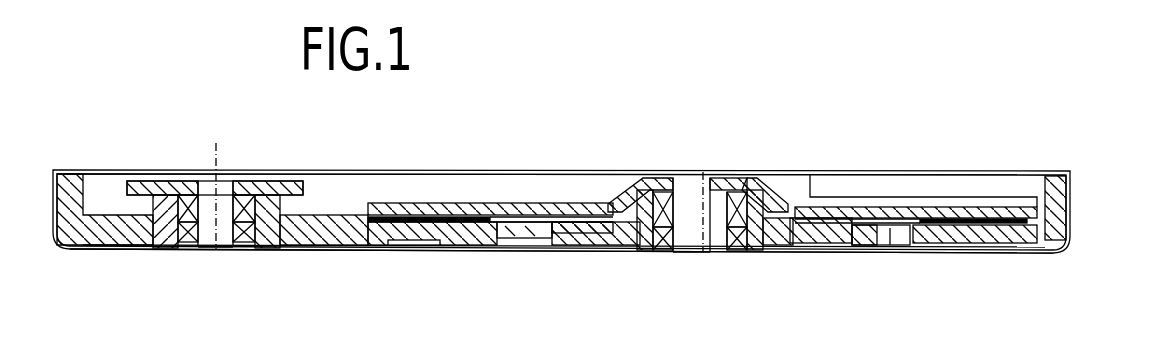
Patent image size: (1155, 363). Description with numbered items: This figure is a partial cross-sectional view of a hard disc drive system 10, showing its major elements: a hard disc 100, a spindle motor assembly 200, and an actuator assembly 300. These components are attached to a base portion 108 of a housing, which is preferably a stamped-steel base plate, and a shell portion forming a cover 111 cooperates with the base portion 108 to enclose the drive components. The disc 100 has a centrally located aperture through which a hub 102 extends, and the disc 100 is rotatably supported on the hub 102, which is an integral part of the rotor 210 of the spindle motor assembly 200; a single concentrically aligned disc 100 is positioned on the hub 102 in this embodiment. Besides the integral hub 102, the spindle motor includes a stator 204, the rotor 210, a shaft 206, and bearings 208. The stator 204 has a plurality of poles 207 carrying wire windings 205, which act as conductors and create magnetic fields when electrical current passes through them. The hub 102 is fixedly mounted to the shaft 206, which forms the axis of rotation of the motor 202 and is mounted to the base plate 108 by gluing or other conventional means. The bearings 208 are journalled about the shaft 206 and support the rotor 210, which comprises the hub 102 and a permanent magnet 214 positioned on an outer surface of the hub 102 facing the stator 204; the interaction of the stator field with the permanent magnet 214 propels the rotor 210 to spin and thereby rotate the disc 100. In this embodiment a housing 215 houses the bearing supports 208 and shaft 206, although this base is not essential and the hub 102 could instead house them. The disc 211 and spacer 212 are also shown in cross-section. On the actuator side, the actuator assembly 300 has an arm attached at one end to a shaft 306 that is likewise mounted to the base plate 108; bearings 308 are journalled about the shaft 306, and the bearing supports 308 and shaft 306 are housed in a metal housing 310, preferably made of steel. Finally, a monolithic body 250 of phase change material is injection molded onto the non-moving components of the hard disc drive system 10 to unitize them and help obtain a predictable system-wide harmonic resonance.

The hard disc drive system 10 is at (570, 283).
The hard disc 100 is at (1045, 210).
The hub 102 is at (657, 172).
The base portion 108 is at (93, 250).
The cover 111 is at (788, 173).
The spindle motor assembly 200 is at (698, 193).
The motor 202 is at (705, 172).
The stator 204 is at (373, 225).
The wire windings 205 is at (437, 243).
The shaft 206 is at (715, 235).
The poles 207 is at (468, 225).
The bearings 208 is at (662, 240).
The rotor 210 is at (748, 185).
The disk 211 is at (488, 215).
The clamp 212 is at (509, 210).
The permanent magnet 214 is at (520, 238).
The housing 215 is at (795, 243).
The monolithic body 250 is at (330, 230).
The actuator assembly 300 is at (215, 198).
The shaft 306 is at (224, 248).
The bearings 308 is at (188, 245).
The metal housing 310 is at (262, 240).